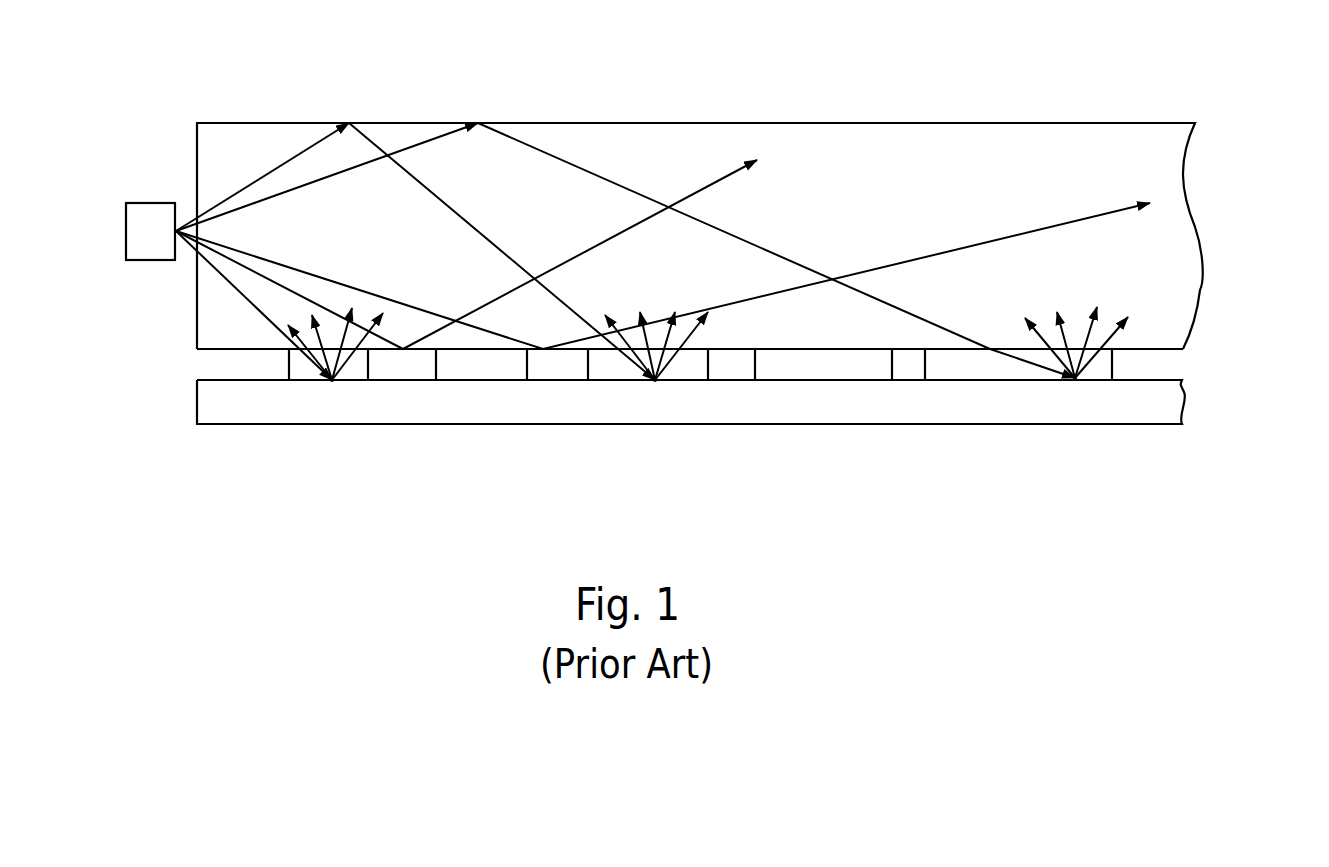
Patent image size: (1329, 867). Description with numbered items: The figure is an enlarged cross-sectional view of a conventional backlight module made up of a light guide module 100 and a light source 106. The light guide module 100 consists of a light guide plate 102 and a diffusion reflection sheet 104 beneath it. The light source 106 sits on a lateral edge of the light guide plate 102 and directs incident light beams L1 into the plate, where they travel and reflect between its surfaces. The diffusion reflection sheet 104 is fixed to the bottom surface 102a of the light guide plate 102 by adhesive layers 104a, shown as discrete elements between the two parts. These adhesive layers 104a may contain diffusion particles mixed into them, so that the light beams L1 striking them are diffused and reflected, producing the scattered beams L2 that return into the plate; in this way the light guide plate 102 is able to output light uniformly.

The light guide module 100 is at (705, 284).
The light guide plate 102 is at (1130, 137).
The bottom surface 102a is at (235, 351).
The diffusion reflection sheet 104 is at (208, 398).
The adhesive layers 104a is at (353, 373).
The light source 106 is at (130, 230).
The incident light beams L1 is at (263, 275).
The light reflected by microstructures L2 is at (367, 340).